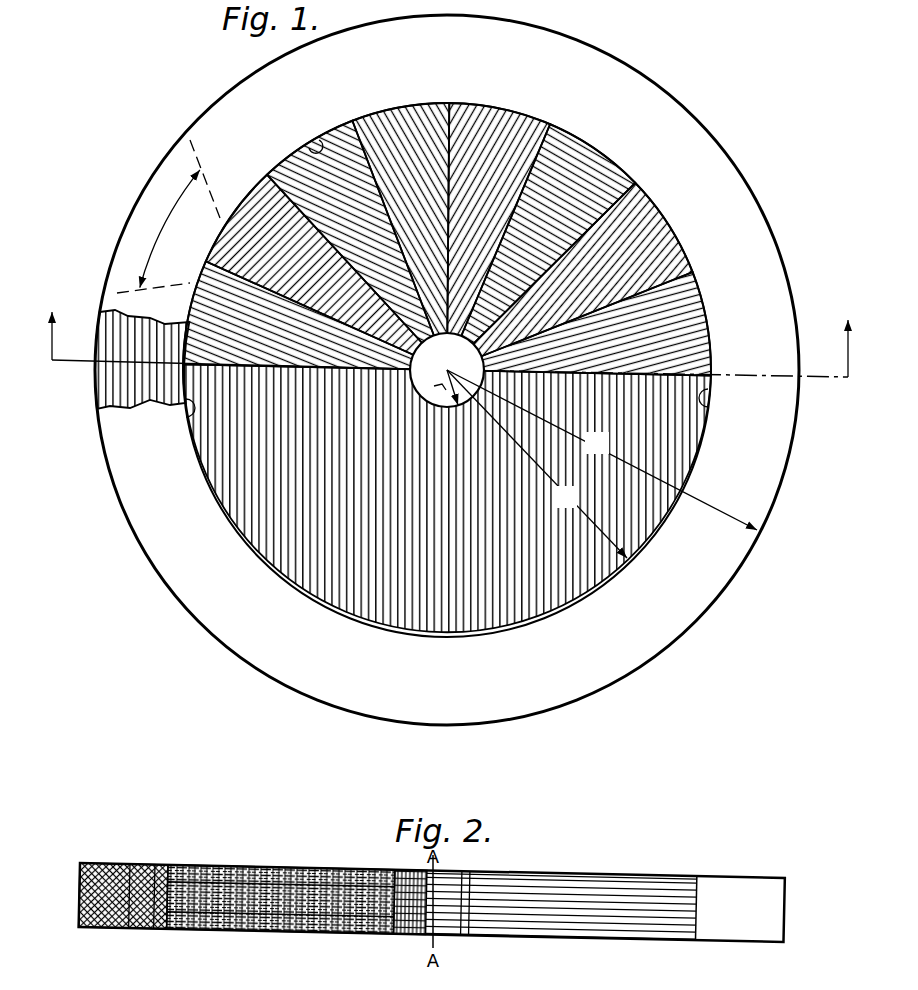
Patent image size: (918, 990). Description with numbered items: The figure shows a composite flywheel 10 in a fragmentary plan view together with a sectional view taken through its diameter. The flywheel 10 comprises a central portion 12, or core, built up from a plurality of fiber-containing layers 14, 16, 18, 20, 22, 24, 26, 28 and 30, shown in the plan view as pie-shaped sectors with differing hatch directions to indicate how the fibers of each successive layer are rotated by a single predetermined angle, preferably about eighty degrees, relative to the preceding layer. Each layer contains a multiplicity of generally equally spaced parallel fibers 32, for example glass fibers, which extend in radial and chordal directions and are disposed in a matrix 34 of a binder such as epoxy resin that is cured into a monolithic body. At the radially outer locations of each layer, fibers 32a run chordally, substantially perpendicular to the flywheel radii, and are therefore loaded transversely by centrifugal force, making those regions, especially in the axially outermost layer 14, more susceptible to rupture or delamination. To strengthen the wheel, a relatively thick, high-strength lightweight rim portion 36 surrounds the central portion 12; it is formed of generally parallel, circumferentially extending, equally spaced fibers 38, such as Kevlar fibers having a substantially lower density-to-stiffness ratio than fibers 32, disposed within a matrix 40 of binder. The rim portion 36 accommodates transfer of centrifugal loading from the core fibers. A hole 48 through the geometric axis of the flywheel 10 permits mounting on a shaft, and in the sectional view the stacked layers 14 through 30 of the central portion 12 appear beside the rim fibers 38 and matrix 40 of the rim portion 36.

In FIG. 1, the flywheel 10 is at (444, 378).
In FIG. 1, the central portion 12 is at (196, 481).
In FIG. 2, the central portion 12 is at (589, 872).
In FIG. 1, the fiber-containing layer 14 is at (267, 453).
In FIG. 2, the fiber-containing layer 14 is at (505, 877).
In FIG. 1, the fiber-containing layer 16 is at (219, 323).
In FIG. 2, the fiber-containing layer 16 is at (525, 887).
In FIG. 1, the fiber-containing layer 18 is at (252, 254).
In FIG. 2, the fiber-containing layer 18 is at (545, 893).
In FIG. 1, the fiber-containing layer 20 is at (322, 201).
In FIG. 2, the fiber-containing layer 20 is at (605, 903).
In FIG. 1, the fiber-containing layer 22 is at (400, 163).
In FIG. 2, the fiber-containing layer 22 is at (640, 912).
In FIG. 1, the fiber-containing layer 24 is at (478, 163).
In FIG. 2, the fiber-containing layer 24 is at (650, 915).
In FIG. 1, the fiber-containing layer 26 is at (563, 196).
In FIG. 2, the fiber-containing layer 26 is at (622, 921).
In FIG. 1, the fiber-containing layer 28 is at (628, 261).
In FIG. 2, the fiber-containing layer 28 is at (600, 927).
In FIG. 1, the fiber-containing layer 30 is at (655, 331).
In FIG. 2, the fiber-containing layer 30 is at (570, 932).
In FIG. 1, the fibers 32 is at (272, 573).
In FIG. 2, the fibers 32 is at (258, 868).
In FIG. 1, the chordally directed fibers 32a is at (312, 146).
In FIG. 1, the matrix 34 is at (550, 573).
In FIG. 2, the matrix 34 is at (362, 932).
In FIG. 1, the rim portion 36 is at (792, 480).
In FIG. 2, the rim portion 36 is at (114, 862).
In FIG. 1, the rim fibers 38 is at (141, 402).
In FIG. 2, the rim fibers 38 is at (155, 866).
In FIG. 2, the rim matrix 40 is at (106, 930).
In FIG. 1, the hole 48 is at (473, 340).